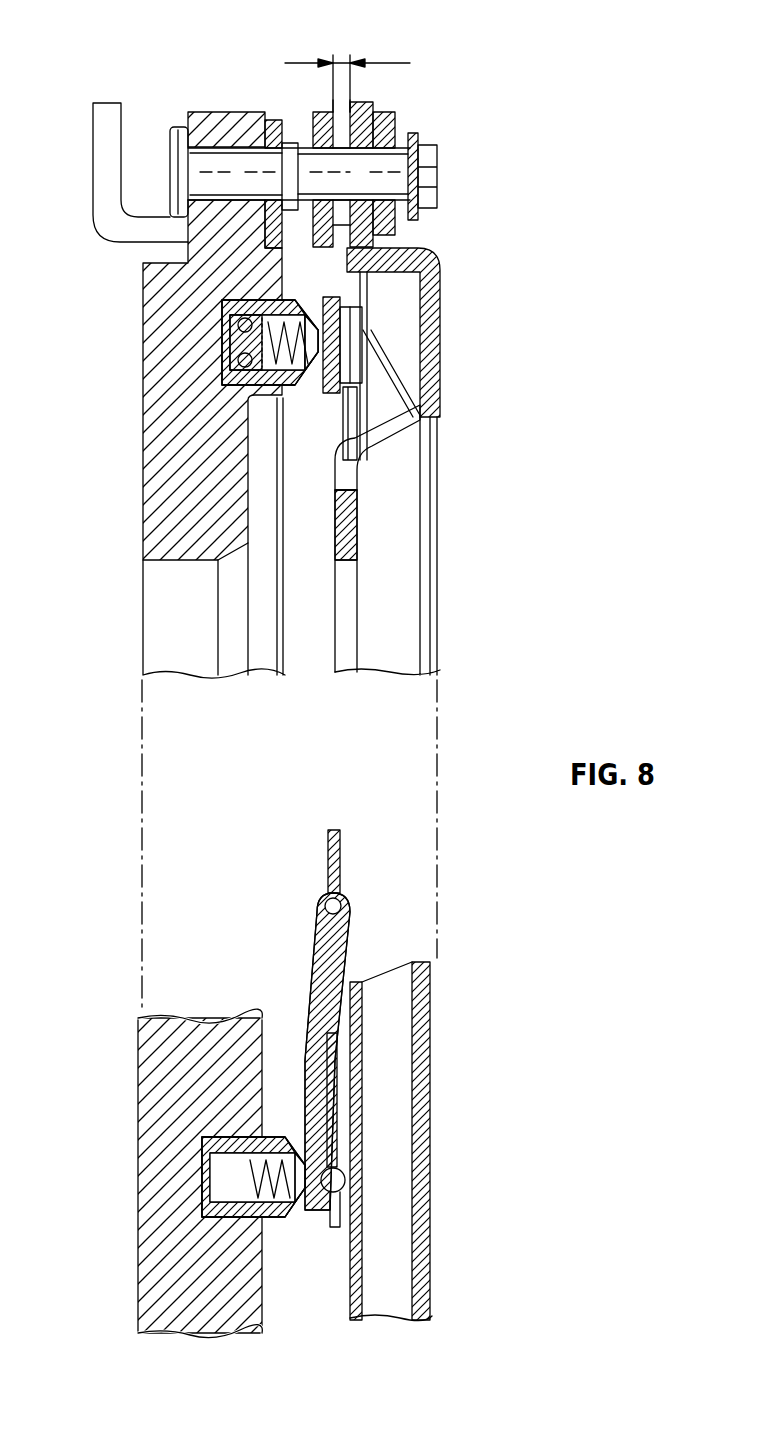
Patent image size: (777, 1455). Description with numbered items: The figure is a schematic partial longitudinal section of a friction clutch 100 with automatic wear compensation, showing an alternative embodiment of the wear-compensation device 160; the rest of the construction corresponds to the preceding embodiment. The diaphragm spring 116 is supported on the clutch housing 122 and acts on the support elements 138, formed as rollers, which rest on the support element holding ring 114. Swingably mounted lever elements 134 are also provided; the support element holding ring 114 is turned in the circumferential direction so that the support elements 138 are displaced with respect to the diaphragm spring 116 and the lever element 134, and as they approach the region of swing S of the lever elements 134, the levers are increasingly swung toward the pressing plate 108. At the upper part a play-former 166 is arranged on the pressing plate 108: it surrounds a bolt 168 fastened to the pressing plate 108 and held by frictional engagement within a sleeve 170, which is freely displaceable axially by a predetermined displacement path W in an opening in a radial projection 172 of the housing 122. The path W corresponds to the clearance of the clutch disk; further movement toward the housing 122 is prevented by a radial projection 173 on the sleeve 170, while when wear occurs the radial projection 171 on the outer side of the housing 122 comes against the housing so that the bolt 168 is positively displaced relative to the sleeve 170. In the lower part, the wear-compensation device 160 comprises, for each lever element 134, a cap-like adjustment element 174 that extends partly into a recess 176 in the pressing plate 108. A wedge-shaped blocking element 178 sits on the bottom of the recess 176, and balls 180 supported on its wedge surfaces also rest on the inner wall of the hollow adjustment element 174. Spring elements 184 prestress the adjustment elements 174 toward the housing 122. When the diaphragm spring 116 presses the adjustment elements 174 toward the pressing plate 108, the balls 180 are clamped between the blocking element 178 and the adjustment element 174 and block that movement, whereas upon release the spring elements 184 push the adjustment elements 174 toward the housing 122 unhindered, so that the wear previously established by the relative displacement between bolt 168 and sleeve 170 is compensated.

The clutch 100 is at (497, 562).
The pressing plate 108 is at (165, 525).
The support element holding ring 114 is at (330, 850).
The diaphragm spring 116 is at (433, 380).
The clutch housing 122 is at (428, 1022).
The lever element 134 is at (347, 487).
The support element 138 is at (345, 338).
The wear-compensation device 160 is at (212, 1120).
The play-former 166 is at (218, 98).
The bolt 168 is at (400, 172).
The sleeve 170 is at (388, 122).
The radial projection 171 is at (388, 232).
The radial projection 172 is at (358, 100).
The radial projection 173 is at (313, 117).
The adjustment element 174 is at (288, 1205).
The recess 176 is at (232, 1145).
The blocking element 178 is at (235, 343).
The balls 180 is at (240, 322).
The spring element 184 is at (350, 345).
The displacement path W is at (342, 63).
The region of swing S is at (322, 892).